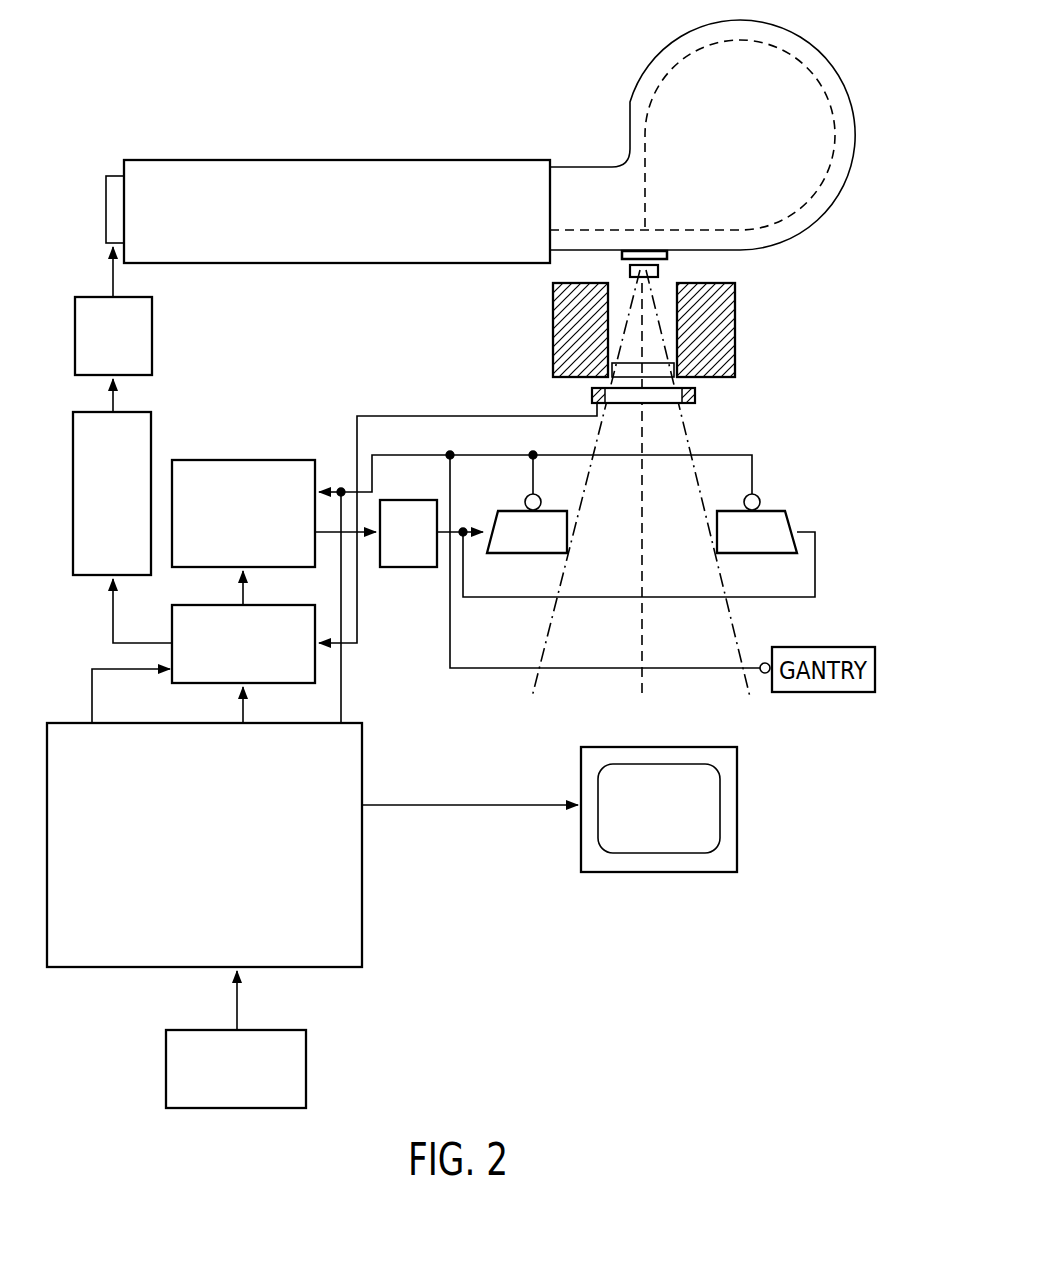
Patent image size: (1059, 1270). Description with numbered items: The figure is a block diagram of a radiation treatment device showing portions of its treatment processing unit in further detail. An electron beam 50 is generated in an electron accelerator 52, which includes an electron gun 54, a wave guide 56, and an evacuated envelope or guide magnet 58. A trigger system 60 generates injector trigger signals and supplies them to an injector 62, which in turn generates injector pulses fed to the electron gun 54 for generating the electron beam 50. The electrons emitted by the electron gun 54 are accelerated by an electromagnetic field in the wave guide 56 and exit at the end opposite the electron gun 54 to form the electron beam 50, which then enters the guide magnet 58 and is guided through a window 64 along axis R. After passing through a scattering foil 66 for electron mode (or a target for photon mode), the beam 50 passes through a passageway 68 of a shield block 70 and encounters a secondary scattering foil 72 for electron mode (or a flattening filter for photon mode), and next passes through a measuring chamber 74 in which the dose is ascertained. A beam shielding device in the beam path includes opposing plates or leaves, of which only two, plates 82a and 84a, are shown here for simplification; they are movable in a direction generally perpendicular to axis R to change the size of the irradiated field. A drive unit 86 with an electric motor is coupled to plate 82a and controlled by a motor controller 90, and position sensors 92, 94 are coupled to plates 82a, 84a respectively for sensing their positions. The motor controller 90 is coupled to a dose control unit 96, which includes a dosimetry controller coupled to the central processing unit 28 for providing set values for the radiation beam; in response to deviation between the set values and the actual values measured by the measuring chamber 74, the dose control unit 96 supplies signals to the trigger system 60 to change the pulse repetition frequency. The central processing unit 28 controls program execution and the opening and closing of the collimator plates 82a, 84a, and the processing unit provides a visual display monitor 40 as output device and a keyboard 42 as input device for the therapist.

The central processing unit 28 is at (362, 746).
The visual display monitor 40 is at (647, 821).
The keyboard 42 is at (225, 1081).
The electron beam 50 is at (805, 62).
The electron accelerator 52 is at (535, 122).
The electron gun 54 is at (106, 205).
The wave guide 56 is at (342, 160).
The guide magnet 58 is at (800, 233).
The trigger system 60 is at (101, 505).
The injector 62 is at (101, 350).
The window 64 is at (622, 255).
The scattering foil 66 is at (660, 270).
The passageway 68 is at (608, 308).
The shield block 70 is at (562, 352).
The secondary scattering foil 72 is at (630, 370).
The measuring chamber 74 is at (697, 396).
The plate 82a is at (509, 546).
The plate 84a is at (734, 546).
The drive unit 86 is at (396, 546).
The motor controller 90 is at (231, 526).
The position sensor 92 is at (525, 500).
The position sensor 94 is at (762, 497).
The dose control unit 96 is at (231, 658).
The axis R is at (645, 556).